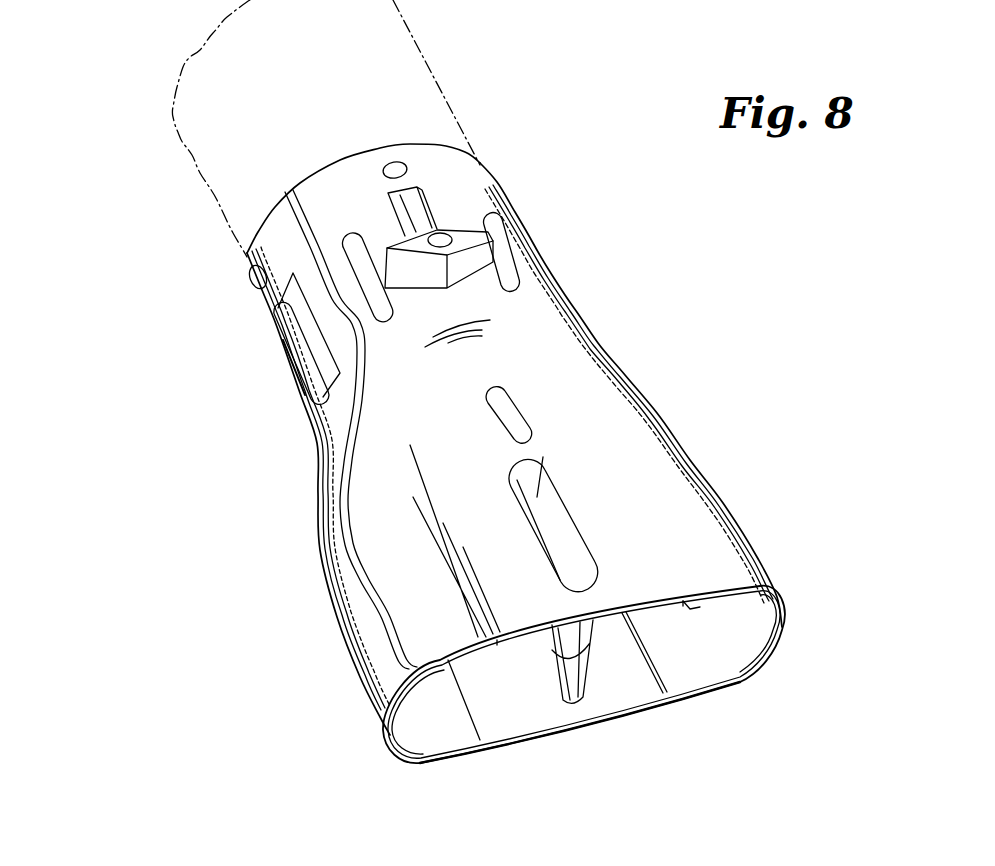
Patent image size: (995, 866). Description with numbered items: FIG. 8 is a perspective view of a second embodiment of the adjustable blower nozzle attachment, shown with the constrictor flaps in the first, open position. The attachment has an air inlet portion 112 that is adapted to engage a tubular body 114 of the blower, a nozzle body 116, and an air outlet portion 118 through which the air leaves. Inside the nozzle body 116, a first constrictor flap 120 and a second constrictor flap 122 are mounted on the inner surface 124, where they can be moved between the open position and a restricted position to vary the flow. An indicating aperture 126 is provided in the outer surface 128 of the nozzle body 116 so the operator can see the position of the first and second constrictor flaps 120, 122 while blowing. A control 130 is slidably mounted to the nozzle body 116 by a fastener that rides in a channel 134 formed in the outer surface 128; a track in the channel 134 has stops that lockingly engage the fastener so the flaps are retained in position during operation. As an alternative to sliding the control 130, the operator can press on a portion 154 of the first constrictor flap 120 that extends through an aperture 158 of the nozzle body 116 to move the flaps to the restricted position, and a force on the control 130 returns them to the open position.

The air inlet portion 112 is at (438, 147).
The tubular body 114 is at (192, 154).
The nozzle body 116 is at (324, 513).
The air outlet portion 118 is at (643, 597).
The first constrictor flap 120 is at (712, 663).
The second constrictor flap 122 is at (446, 733).
The inner surface 124 is at (635, 697).
The indicating aperture 126 is at (517, 407).
The outer surface 128 is at (366, 214).
The control 130 is at (485, 248).
The channel 134 is at (432, 217).
The portion of first constrictor flap 154 is at (292, 346).
The aperture 158 is at (314, 430).